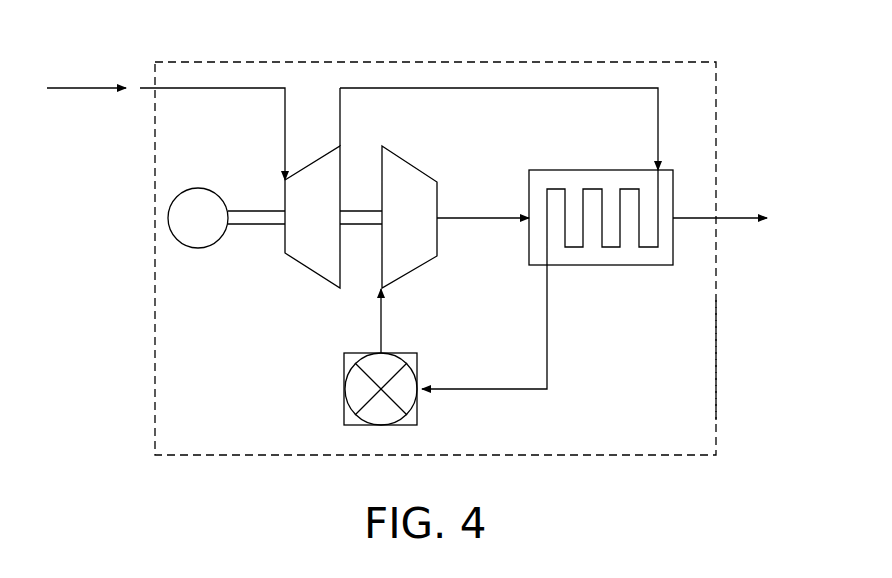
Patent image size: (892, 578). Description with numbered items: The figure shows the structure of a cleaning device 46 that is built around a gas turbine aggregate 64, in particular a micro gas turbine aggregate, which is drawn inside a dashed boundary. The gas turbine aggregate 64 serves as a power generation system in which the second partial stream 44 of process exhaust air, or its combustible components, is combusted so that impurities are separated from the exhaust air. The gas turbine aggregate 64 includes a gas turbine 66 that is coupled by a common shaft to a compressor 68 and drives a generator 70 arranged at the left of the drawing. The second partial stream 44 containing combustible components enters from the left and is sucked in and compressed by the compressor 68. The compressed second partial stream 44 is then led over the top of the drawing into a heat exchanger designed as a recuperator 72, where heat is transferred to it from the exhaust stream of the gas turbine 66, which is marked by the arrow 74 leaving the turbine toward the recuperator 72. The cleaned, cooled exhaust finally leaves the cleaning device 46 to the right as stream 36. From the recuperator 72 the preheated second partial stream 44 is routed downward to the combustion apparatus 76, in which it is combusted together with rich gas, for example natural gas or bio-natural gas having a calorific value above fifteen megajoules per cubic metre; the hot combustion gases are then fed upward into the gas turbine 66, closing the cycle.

The outlet flow line 36 is at (742, 216).
The second partial stream 44 is at (85, 90).
The cleaning device 46 is at (735, 68).
The gas turbine aggregate 64 is at (720, 365).
The gas turbine 66 is at (411, 165).
The compressor 68 is at (305, 267).
The generator 70 is at (197, 249).
The recuperator 72 is at (592, 170).
The exhaust stream of the gas turbine 74 is at (484, 215).
The combustion apparatus 76 is at (344, 389).